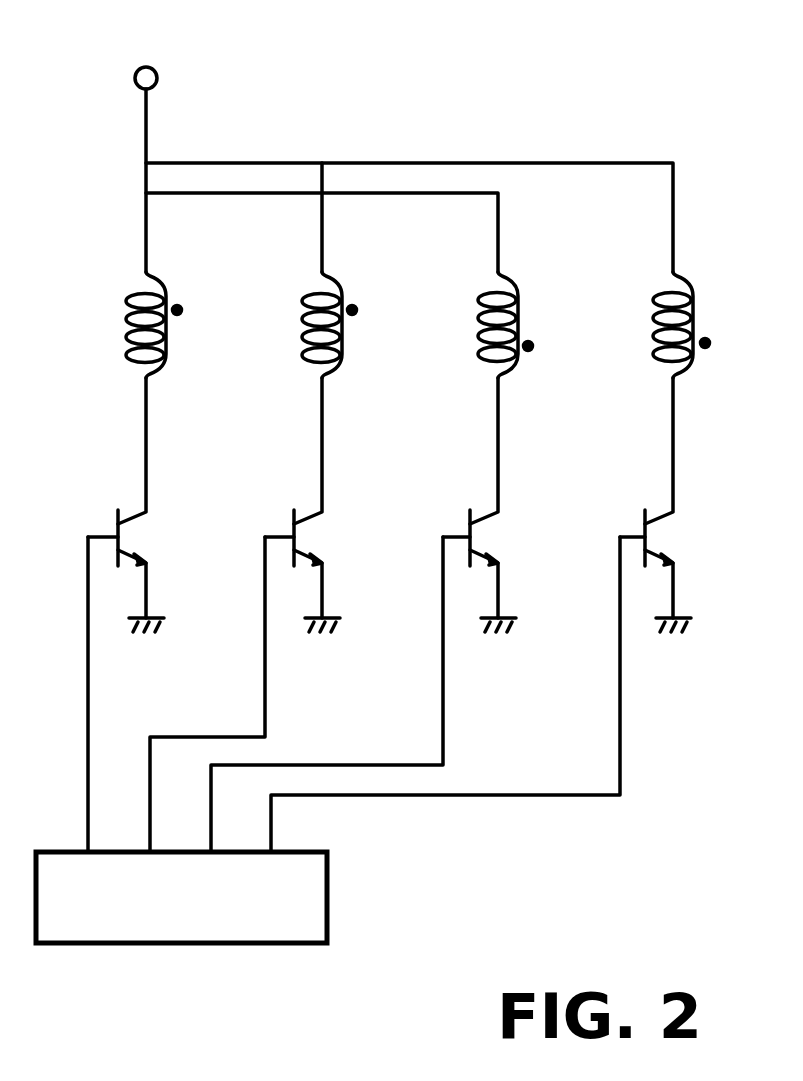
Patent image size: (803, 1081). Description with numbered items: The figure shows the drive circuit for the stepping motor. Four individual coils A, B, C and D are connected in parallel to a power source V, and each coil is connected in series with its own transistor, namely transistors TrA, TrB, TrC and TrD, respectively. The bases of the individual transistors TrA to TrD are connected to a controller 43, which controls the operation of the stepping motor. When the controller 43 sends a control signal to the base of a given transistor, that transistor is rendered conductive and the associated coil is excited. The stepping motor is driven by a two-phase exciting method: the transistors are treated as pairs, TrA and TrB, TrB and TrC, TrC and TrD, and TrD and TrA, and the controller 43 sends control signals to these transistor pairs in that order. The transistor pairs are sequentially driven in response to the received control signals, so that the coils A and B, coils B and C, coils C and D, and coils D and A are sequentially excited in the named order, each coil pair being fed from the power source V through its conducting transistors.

The controller 43 is at (327, 913).
The coil A is at (161, 325).
The coil B is at (340, 325).
The coil C is at (519, 325).
The coil D is at (696, 325).
The transistor TrA is at (155, 505).
The transistor TrB is at (328, 505).
The transistor TrC is at (506, 505).
The transistor TrD is at (683, 505).
The power source V is at (146, 61).